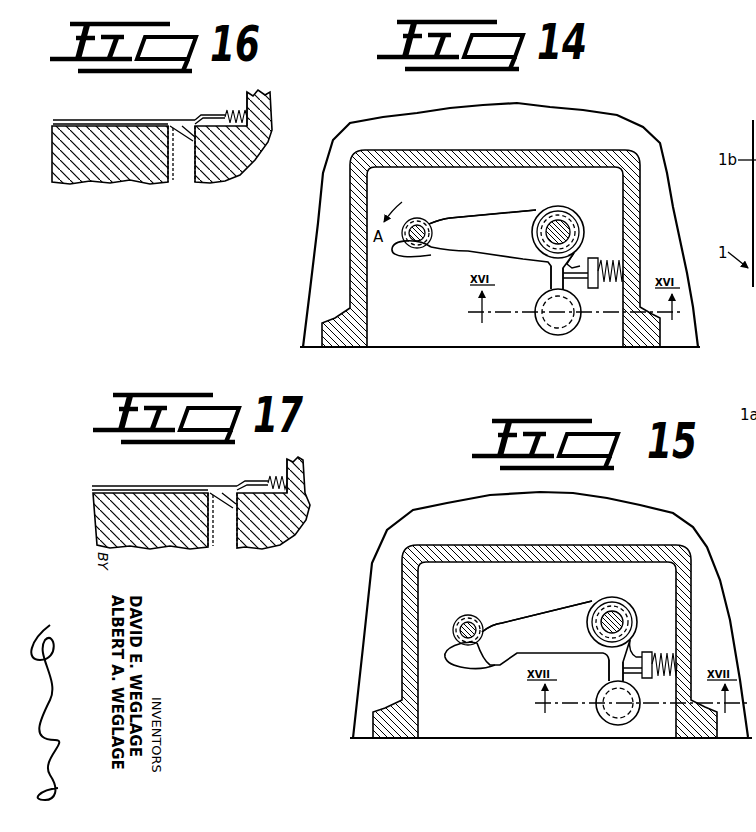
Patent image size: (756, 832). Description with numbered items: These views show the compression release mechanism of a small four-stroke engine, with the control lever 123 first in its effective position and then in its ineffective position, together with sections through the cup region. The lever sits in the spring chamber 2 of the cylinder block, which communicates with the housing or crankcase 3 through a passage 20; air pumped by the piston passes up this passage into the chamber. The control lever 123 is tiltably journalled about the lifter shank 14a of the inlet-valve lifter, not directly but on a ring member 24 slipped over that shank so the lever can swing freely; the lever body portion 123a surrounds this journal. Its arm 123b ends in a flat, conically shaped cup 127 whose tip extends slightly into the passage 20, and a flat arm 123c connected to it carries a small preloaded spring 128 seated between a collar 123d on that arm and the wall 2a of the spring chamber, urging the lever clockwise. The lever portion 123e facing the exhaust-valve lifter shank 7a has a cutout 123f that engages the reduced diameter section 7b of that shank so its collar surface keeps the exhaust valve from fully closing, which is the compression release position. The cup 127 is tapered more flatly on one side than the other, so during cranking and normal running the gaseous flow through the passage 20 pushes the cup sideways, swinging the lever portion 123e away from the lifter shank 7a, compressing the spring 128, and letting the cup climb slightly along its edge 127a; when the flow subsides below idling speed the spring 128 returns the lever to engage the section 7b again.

In FIG. 14, the spring chamber 2 is at (410, 335).
In FIG. 15, the spring chamber 2 is at (468, 725).
In FIG. 14, the wall of spring chamber 2a is at (617, 212).
In FIG. 15, the wall of spring chamber 2a is at (668, 602).
In FIG. 16, the wall of spring chamber 2a is at (250, 92).
In FIG. 17, the wall of spring chamber 2a is at (289, 459).
In FIG. 16, the housing or crankcase 3 is at (110, 165).
In FIG. 17, the housing or crankcase 3 is at (170, 535).
In FIG. 14, the lifter shank 7a is at (404, 222).
In FIG. 15, the lifter shank 7a is at (455, 620).
In FIG. 14, the reduced diameter section 7b is at (417, 224).
In FIG. 15, the reduced diameter section 7b is at (468, 621).
In FIG. 14, the lifter shank 14a is at (563, 226).
In FIG. 15, the lifter shank 14a is at (616, 615).
In FIG. 14, the passage 20 is at (559, 330).
In FIG. 15, the passage 20 is at (620, 725).
In FIG. 16, the passage 20 is at (185, 168).
In FIG. 17, the passage 20 is at (222, 530).
In FIG. 14, the ring member 24 is at (590, 230).
In FIG. 15, the ring member 24 is at (637, 623).
In FIG. 14, the control lever 123 is at (492, 212).
In FIG. 15, the control lever 123 is at (521, 611).
In FIG. 16, the control lever 123 is at (76, 120).
In FIG. 17, the control lever 123 is at (137, 486).
In FIG. 14, the lever arm 123a is at (534, 207).
In FIG. 15, the lever arm 123a is at (575, 602).
In FIG. 14, the arm 123b is at (558, 272).
In FIG. 15, the arm 123b is at (613, 671).
In FIG. 14, the flat arm 123c is at (582, 262).
In FIG. 15, the flat arm 123c is at (637, 657).
In FIG. 14, the collar 123d is at (593, 289).
In FIG. 15, the collar 123d is at (645, 680).
In FIG. 14, the lever portion 123e is at (423, 255).
In FIG. 15, the lever portion 123e is at (487, 658).
In FIG. 14, the cutout 123f is at (434, 231).
In FIG. 15, the cutout 123f is at (476, 646).
In FIG. 14, the conically shaped cup 127 is at (540, 328).
In FIG. 15, the conically shaped cup 127 is at (602, 722).
In FIG. 16, the conically shaped cup 127 is at (178, 124).
In FIG. 17, the conically shaped cup 127 is at (224, 490).
In FIG. 16, the edge of cup 127a is at (216, 170).
In FIG. 17, the edge of cup 127a is at (262, 540).
In FIG. 14, the preloaded spring 128 is at (612, 287).
In FIG. 15, the preloaded spring 128 is at (665, 680).
In FIG. 16, the preloaded spring 128 is at (228, 110).
In FIG. 17, the preloaded spring 128 is at (276, 476).